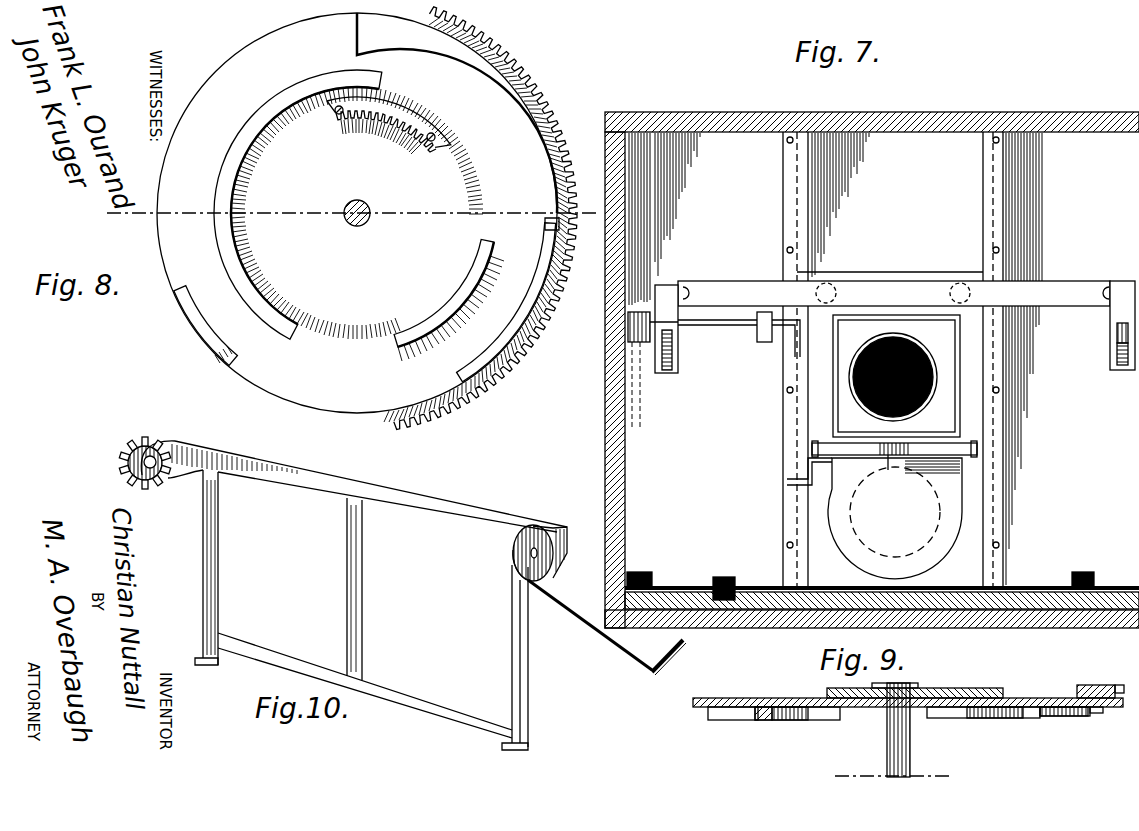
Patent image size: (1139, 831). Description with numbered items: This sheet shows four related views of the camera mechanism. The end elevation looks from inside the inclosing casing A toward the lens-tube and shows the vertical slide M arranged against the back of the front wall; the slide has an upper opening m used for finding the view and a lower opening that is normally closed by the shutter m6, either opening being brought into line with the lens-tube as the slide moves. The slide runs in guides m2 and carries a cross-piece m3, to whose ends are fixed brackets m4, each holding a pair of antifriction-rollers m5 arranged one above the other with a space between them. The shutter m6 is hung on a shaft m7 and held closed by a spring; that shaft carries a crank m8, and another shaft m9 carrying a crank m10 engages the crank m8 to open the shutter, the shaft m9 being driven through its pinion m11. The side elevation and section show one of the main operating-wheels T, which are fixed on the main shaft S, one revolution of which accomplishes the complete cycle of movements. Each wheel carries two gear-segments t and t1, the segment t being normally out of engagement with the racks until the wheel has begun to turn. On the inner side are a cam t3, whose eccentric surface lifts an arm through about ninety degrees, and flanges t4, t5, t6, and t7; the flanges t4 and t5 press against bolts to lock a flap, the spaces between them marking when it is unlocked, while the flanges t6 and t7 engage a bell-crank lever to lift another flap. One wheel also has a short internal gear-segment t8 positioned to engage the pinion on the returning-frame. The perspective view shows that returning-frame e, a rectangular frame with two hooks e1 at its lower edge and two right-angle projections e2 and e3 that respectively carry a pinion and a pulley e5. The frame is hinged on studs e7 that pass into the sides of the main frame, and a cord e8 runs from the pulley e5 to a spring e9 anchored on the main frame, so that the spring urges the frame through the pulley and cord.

In FIG. 7, the inclosing casing A is at (600, 412).
In FIG. 10, the inclosing casing A is at (135, 452).
In FIG. 7, the vertical slide M is at (888, 376).
In FIG. 7, the opening m is at (1012, 379).
In FIG. 7, the guides m2 is at (928, 536).
In FIG. 7, the cross-piece m3 is at (1087, 291).
In FIG. 7, the brackets m4 is at (1114, 322).
In FIG. 7, the antifriction-rollers m5 is at (1104, 350).
In FIG. 7, the shutter m6 is at (895, 522).
In FIG. 7, the shaft m7 is at (1035, 359).
In FIG. 7, the crank m8 is at (785, 482).
In FIG. 7, the shaft m9 is at (733, 328).
In FIG. 7, the crank m10 is at (768, 345).
In FIG. 7, the pinion m11 is at (640, 355).
In FIG. 8, the main shaft S is at (355, 226).
In FIG. 9, the main shaft S is at (908, 732).
In FIG. 8, the main operating-wheels T is at (352, 245).
In FIG. 9, the main operating-wheels T is at (908, 707).
In FIG. 8, the gear-segment t is at (357, 213).
In FIG. 8, the gear-segment t1 is at (537, 76).
In FIG. 8, the cam t3 is at (432, 58).
In FIG. 9, the cam t3 is at (1096, 715).
In FIG. 8, the flange t4 is at (262, 311).
In FIG. 9, the flange t4 is at (804, 720).
In FIG. 8, the flange t5 is at (400, 305).
In FIG. 9, the flange t5 is at (983, 728).
In FIG. 8, the flange t6 is at (194, 323).
In FIG. 9, the flange t6 is at (730, 720).
In FIG. 8, the flange t7 is at (506, 302).
In FIG. 9, the flange t7 is at (1067, 716).
In FIG. 8, the internal gear-segment t8 is at (422, 126).
In FIG. 10, the returning-frame e is at (354, 643).
In FIG. 10, the hooks e1 is at (142, 479).
In FIG. 10, the right-angle projection e2 is at (170, 446).
In FIG. 10, the right-angle projection e3 is at (548, 529).
In FIG. 10, the pulley e5 is at (542, 568).
In FIG. 10, the studs e7 is at (210, 667).
In FIG. 10, the cord e8 is at (606, 640).
In FIG. 10, the spring e9 is at (680, 657).